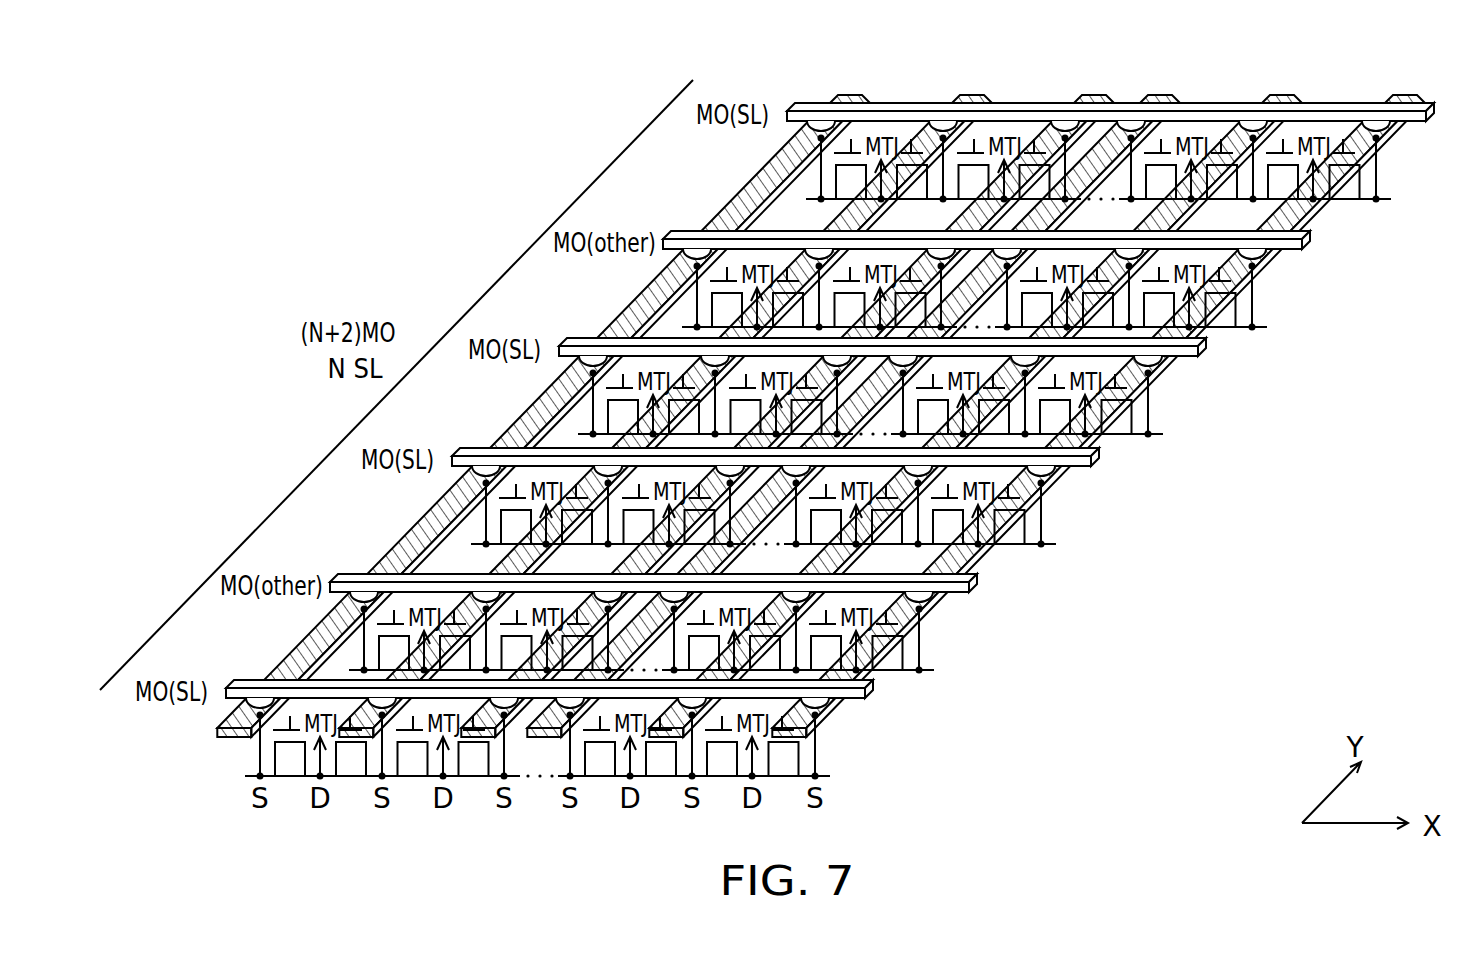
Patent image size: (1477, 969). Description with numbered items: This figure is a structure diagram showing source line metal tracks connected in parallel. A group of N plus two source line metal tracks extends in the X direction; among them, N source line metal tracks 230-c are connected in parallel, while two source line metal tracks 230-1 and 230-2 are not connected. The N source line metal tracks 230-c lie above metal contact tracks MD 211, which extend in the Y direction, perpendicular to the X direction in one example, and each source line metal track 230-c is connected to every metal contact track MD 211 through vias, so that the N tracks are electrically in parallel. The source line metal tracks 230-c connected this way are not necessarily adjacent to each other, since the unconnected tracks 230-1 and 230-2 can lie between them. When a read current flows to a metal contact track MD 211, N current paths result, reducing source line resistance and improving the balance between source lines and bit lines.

The metal contact track MD 211 is at (1405, 94).
The source line metal track 230-c is at (874, 685).
The source line metal track 230-1 is at (978, 579).
The source line metal track 230-2 is at (1311, 236).